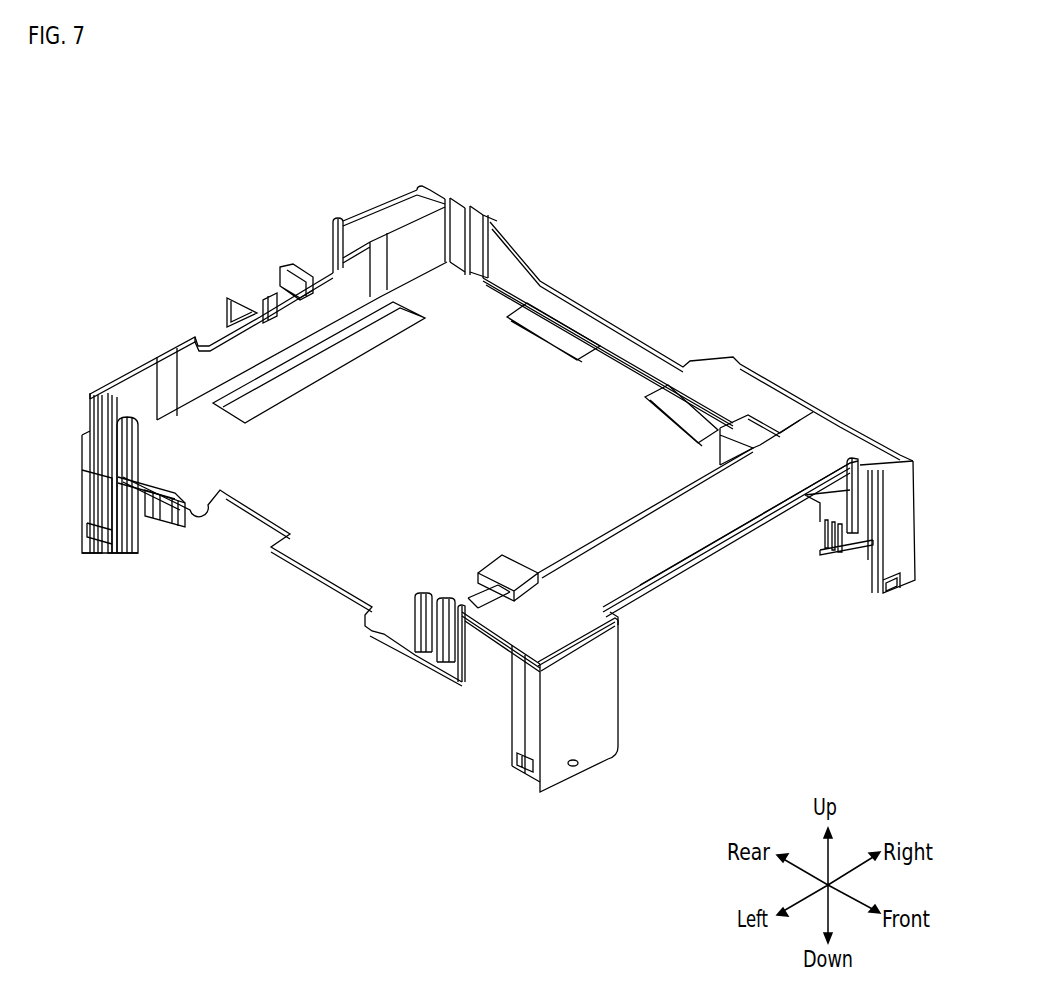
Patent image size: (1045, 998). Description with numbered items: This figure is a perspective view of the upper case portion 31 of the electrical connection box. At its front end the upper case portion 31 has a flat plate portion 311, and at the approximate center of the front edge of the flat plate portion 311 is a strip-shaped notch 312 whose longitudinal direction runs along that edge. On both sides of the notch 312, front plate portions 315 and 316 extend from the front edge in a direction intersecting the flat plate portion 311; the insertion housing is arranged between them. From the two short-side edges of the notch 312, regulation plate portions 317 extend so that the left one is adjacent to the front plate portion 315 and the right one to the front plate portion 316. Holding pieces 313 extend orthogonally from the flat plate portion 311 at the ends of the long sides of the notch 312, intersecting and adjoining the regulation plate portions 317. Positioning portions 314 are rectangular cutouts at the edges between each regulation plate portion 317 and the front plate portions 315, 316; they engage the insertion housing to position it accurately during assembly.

The upper case portion 31 is at (497, 436).
The flat plate portion 311 is at (795, 455).
The notch 312 is at (680, 573).
The holding pieces 313 is at (857, 500).
The positioning portions 314 is at (877, 460).
The front plate portion 315 is at (593, 747).
The front plate portion 316 is at (905, 557).
The regulation plate portions 317 is at (858, 463).